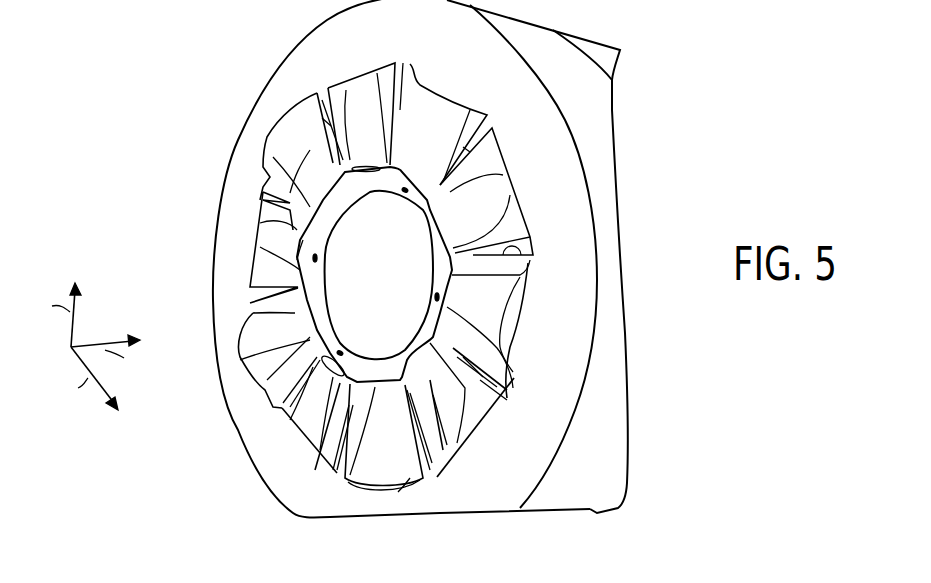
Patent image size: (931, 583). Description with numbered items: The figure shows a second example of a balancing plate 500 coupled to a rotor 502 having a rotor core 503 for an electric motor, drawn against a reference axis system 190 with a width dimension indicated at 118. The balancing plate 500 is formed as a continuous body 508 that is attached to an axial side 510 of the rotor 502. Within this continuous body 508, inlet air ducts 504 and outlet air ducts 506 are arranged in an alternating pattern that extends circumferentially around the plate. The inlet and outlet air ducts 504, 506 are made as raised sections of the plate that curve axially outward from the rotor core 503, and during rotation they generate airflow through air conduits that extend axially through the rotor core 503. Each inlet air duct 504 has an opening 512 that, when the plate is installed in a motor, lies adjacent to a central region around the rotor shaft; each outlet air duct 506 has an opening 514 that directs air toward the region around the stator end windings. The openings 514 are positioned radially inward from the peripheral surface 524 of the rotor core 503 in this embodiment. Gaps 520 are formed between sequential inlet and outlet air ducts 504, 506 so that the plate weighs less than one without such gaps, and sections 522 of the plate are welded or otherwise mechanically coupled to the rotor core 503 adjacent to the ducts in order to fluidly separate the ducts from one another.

The width dimension 118 is at (412, 271).
The coordinate system 190 is at (112, 312).
The balancing plate 500 is at (238, 224).
The rotor 502 is at (186, 40).
The rotor core 503 is at (223, 97).
The inlet air ducts 504 is at (310, 269).
The outlet air ducts 506 is at (379, 492).
The continuous body 508 is at (388, 435).
The axial side 510 is at (327, 503).
The opening 512 is at (312, 239).
The opening 514 is at (400, 481).
The gaps 520 is at (444, 480).
The sections 522 is at (275, 210).
The peripheral surface 524 is at (590, 97).